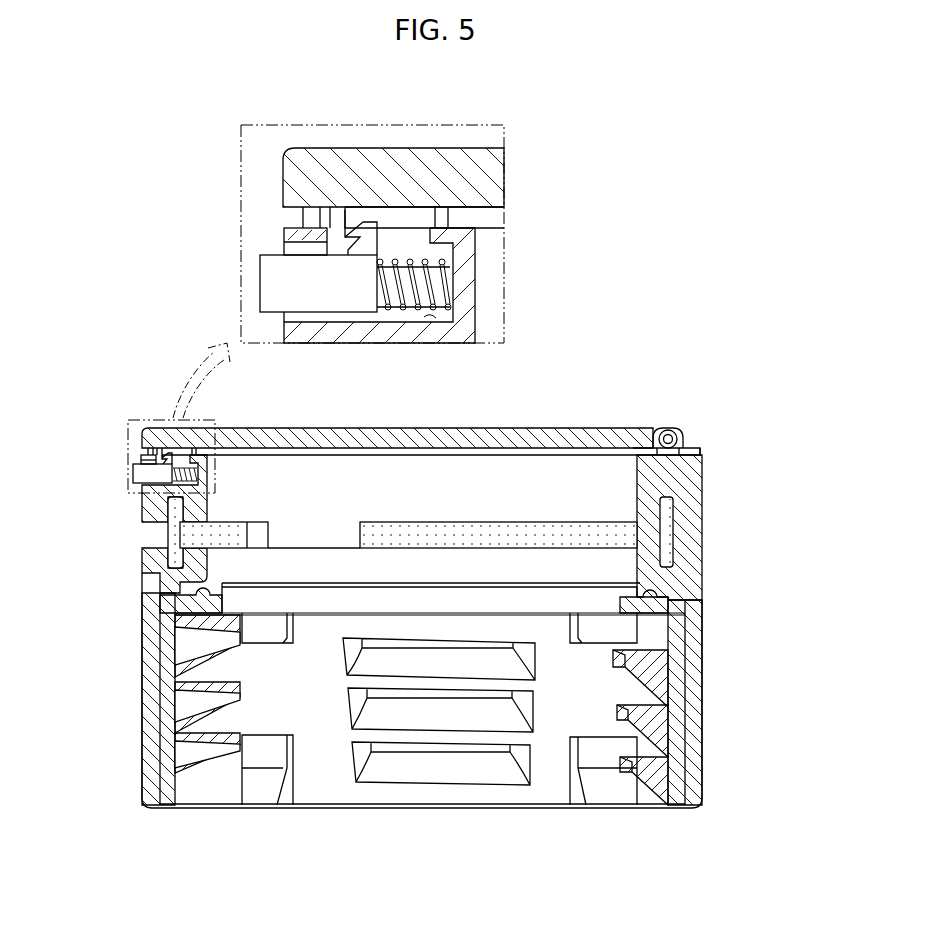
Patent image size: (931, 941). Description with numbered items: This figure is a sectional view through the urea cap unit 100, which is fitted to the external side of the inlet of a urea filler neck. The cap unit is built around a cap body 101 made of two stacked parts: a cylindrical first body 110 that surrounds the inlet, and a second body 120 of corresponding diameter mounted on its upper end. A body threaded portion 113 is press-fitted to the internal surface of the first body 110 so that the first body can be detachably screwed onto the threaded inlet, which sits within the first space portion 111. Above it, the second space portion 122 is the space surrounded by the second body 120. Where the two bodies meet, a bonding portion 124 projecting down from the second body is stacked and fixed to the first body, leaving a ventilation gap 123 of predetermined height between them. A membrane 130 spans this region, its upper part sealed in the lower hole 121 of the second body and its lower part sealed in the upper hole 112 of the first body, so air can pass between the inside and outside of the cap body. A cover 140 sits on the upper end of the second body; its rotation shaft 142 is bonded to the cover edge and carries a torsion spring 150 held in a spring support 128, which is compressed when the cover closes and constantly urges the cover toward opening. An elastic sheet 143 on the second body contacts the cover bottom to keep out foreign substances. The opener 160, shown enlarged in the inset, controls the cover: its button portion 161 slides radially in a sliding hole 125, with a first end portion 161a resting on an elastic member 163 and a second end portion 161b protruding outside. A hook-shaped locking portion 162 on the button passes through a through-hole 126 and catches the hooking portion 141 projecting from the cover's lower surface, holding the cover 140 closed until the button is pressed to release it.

The urea cap unit 100 is at (435, 582).
The cap body 101 is at (447, 586).
The first body 110 is at (440, 685).
The first space portion 111 is at (580, 698).
The upper hole 112 is at (178, 563).
The body threaded portion 113 is at (676, 750).
The second body 120 is at (426, 488).
The lower hole 121 is at (672, 502).
The second space portion 122 is at (530, 490).
The ventilation gap 123 is at (156, 542).
The bonding portion 124 is at (645, 528).
The sliding hole 125 is at (432, 318).
The through-hole 126 is at (433, 235).
The spring support 128 is at (680, 438).
The membrane 130 is at (426, 488).
The cover 140 is at (383, 150).
The hooking portion 141 is at (355, 250).
The rotation shaft 142 is at (677, 430).
The elastic sheet 143 is at (650, 440).
The torsion spring 150 is at (692, 452).
The opener 160 is at (349, 331).
The button portion 161 is at (292, 346).
The first end portion 161a is at (400, 325).
The second end portion 161b is at (260, 297).
The locking portion 162 is at (346, 221).
The elastic member 163 is at (452, 305).